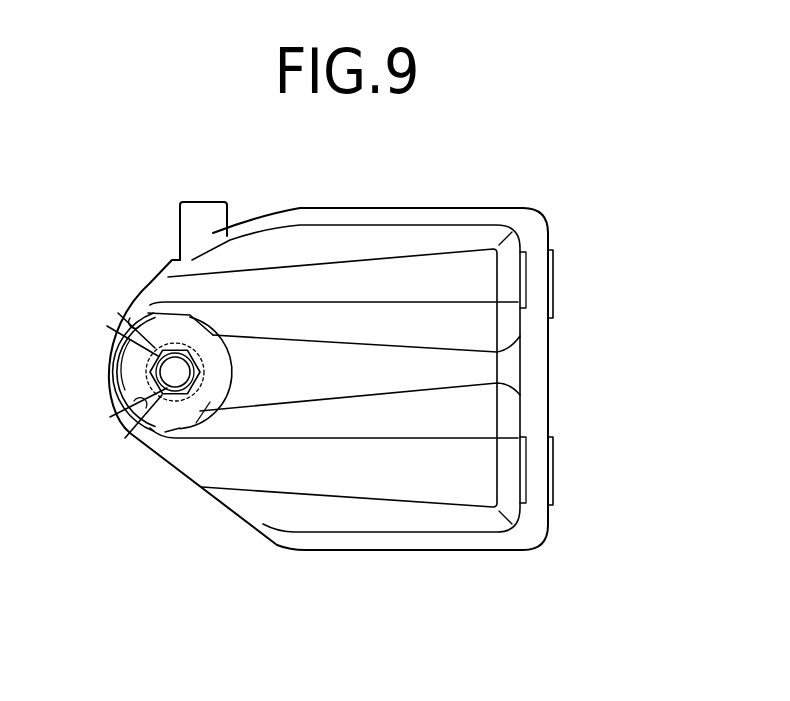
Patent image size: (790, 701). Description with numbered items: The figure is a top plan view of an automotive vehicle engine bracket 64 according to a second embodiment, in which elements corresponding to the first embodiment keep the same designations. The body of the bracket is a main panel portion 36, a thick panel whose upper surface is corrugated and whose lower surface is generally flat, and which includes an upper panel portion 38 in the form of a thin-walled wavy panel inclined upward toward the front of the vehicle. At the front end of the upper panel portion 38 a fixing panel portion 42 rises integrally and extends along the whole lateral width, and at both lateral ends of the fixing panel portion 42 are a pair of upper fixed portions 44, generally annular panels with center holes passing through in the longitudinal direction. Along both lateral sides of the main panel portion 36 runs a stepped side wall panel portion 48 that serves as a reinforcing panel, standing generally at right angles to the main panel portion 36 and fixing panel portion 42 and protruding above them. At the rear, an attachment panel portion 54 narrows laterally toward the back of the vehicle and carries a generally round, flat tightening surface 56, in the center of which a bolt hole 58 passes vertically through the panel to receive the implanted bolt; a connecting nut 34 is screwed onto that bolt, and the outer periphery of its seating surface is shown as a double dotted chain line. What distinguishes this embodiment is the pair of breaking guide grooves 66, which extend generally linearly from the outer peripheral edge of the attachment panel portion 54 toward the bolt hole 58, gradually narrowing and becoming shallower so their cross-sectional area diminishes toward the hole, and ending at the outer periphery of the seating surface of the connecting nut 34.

The connecting nut 34 is at (150, 355).
The main panel portion 36 is at (268, 470).
The upper panel portion 38 is at (462, 475).
The fixing panel portion 42 is at (538, 376).
The upper fixed portions 44 is at (556, 283).
The side wall panel portion 48 is at (377, 218).
The attachment panel portion 54 is at (178, 418).
The tightening surface 56 is at (213, 400).
The bolt hole 58 is at (198, 357).
The engine bracket 64 is at (548, 150).
The breaking guide grooves 66 is at (137, 322).